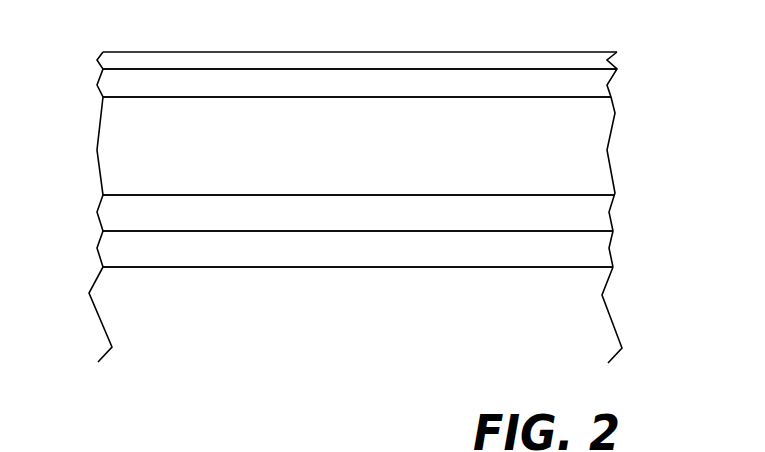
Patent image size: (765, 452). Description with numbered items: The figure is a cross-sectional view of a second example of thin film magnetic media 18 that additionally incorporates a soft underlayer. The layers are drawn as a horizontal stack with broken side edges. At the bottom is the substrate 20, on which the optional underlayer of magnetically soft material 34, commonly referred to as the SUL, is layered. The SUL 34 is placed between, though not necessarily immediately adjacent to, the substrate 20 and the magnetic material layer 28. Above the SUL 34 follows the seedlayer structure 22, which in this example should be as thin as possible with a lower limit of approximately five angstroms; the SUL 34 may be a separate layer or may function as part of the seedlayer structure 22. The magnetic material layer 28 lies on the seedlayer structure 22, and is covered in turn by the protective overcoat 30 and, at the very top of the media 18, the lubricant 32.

The magnetic media 18 is at (138, 35).
The lubricant 32 is at (368, 60).
The protective overcoat 30 is at (585, 83).
The magnetic material layer 28 is at (567, 145).
The seedlayer structure 22 is at (585, 212).
The soft underlayer 34 is at (585, 248).
The substrate 20 is at (568, 312).